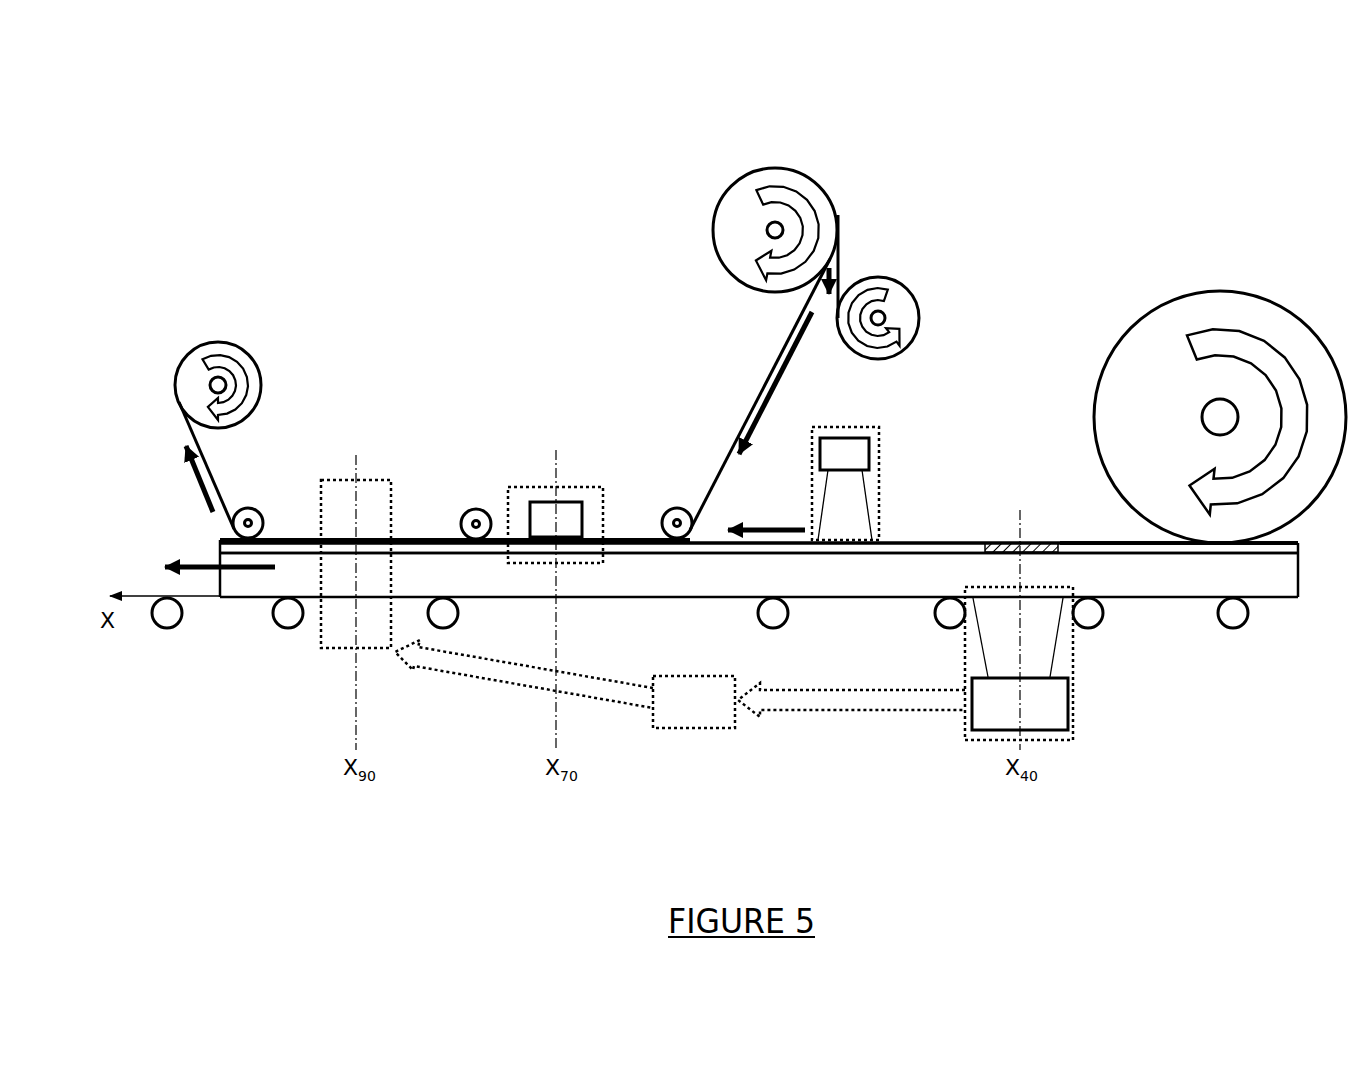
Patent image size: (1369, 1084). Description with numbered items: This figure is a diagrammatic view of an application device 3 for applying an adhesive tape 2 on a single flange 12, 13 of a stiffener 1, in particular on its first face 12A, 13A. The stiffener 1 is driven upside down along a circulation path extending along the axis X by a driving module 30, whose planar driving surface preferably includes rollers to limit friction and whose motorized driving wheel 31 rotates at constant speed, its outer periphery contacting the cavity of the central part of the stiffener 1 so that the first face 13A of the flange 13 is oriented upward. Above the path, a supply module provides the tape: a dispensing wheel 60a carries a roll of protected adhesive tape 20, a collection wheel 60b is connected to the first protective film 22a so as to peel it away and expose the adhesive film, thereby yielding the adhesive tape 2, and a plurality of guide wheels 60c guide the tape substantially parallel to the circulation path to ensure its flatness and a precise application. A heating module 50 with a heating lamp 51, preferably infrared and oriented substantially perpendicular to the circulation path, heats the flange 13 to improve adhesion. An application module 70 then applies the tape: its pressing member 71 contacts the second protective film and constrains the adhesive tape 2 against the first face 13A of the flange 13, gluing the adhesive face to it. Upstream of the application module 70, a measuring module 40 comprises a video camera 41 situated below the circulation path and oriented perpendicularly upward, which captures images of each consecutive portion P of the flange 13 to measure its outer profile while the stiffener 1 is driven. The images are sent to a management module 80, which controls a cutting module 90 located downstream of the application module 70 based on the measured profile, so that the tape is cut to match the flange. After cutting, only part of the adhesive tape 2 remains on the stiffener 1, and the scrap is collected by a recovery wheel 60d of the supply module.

The stiffener 1 is at (1260, 582).
The adhesive tape 2 is at (740, 406).
The application device 3 is at (465, 257).
The flange 12 is at (1133, 550).
The flange 13 is at (1210, 670).
The first face 12A is at (1092, 541).
The first face 13A is at (1092, 541).
The protected adhesive tape 20 is at (842, 234).
The first protective film 22a is at (842, 262).
The driving module 30 is at (1198, 368).
The driving wheel 31 is at (1117, 372).
The measuring module 40 is at (1061, 716).
The video camera 41 is at (1050, 688).
The heating module 50 is at (889, 429).
The heating lamp 51 is at (838, 445).
The dispensing wheel 60a is at (714, 192).
The collection wheel 60b is at (923, 295).
The guide wheels 60c is at (463, 504).
The recovery wheel 60d is at (185, 338).
The application module 70 is at (533, 467).
The pressing member 71 is at (545, 510).
The management module 80 is at (744, 730).
The cutting module 90 is at (370, 476).
The portion P is at (1000, 540).